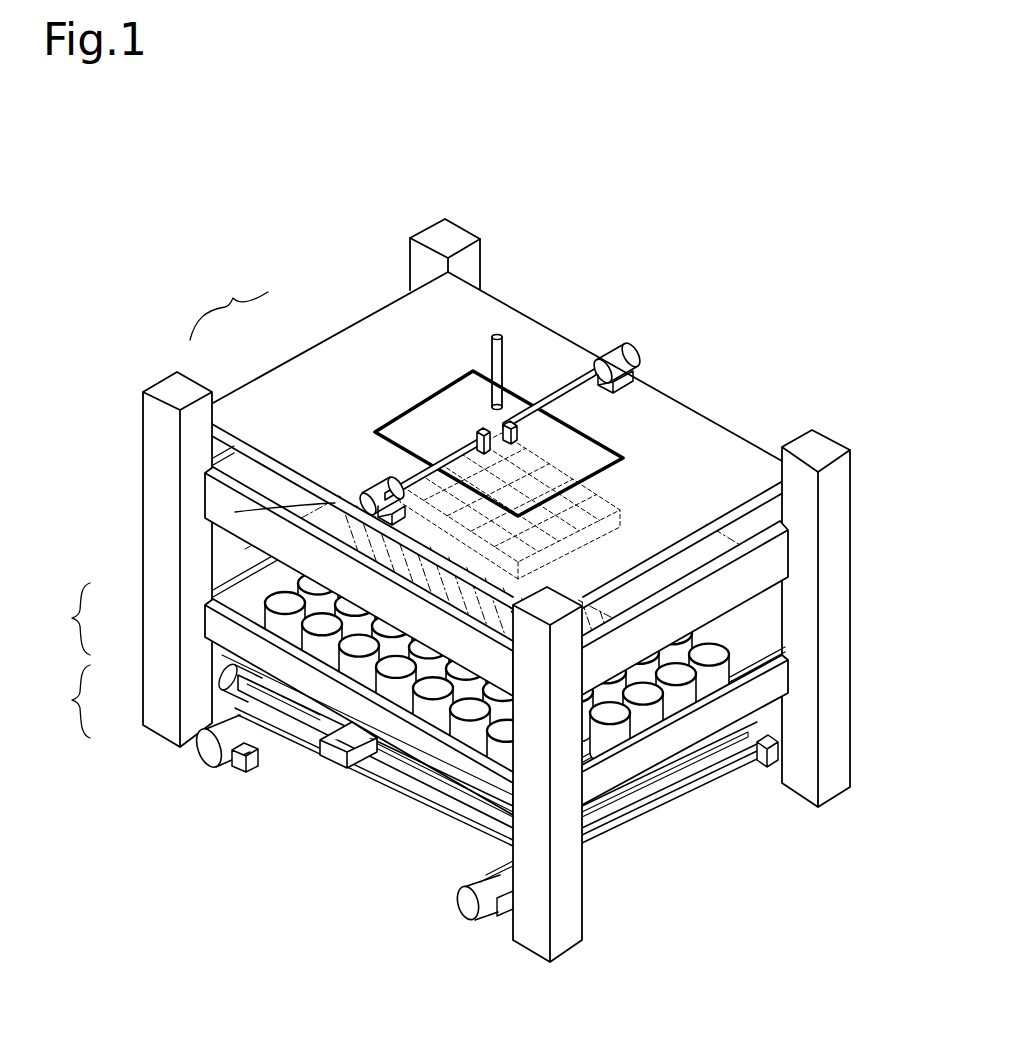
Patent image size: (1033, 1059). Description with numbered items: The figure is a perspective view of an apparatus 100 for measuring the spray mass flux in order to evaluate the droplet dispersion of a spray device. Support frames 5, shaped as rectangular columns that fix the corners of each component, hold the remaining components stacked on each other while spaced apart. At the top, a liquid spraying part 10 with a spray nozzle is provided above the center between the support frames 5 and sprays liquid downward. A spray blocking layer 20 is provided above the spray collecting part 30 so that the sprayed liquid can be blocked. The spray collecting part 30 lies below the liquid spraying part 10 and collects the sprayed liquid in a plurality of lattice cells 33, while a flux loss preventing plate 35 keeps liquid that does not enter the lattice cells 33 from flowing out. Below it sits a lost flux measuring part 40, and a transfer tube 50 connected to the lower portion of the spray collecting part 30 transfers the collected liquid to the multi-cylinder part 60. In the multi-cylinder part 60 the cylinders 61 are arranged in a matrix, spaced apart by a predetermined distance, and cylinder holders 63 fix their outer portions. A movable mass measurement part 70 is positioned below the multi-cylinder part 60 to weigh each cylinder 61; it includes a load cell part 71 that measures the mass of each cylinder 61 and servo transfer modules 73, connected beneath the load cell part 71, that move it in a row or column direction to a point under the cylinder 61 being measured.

The container filling apparatus 100 is at (660, 281).
The support frames 5 is at (432, 233).
The liquid spraying part 10 is at (500, 352).
The spray blocking layer 20 is at (377, 316).
The spray collecting part 30 is at (229, 307).
The lattice cells 33 is at (397, 470).
The flux loss preventing plate 35 is at (275, 490).
The lost flux measuring part 40 is at (210, 492).
The transfer tube 50 is at (290, 543).
The multi-cylinder part 60 is at (66, 619).
The cylinders 61 is at (217, 593).
The cylinder holders 63 is at (233, 631).
The movable mass measurement part 70 is at (66, 701).
The load cell part 71 is at (305, 672).
The servo transfer modules 73 is at (226, 657).